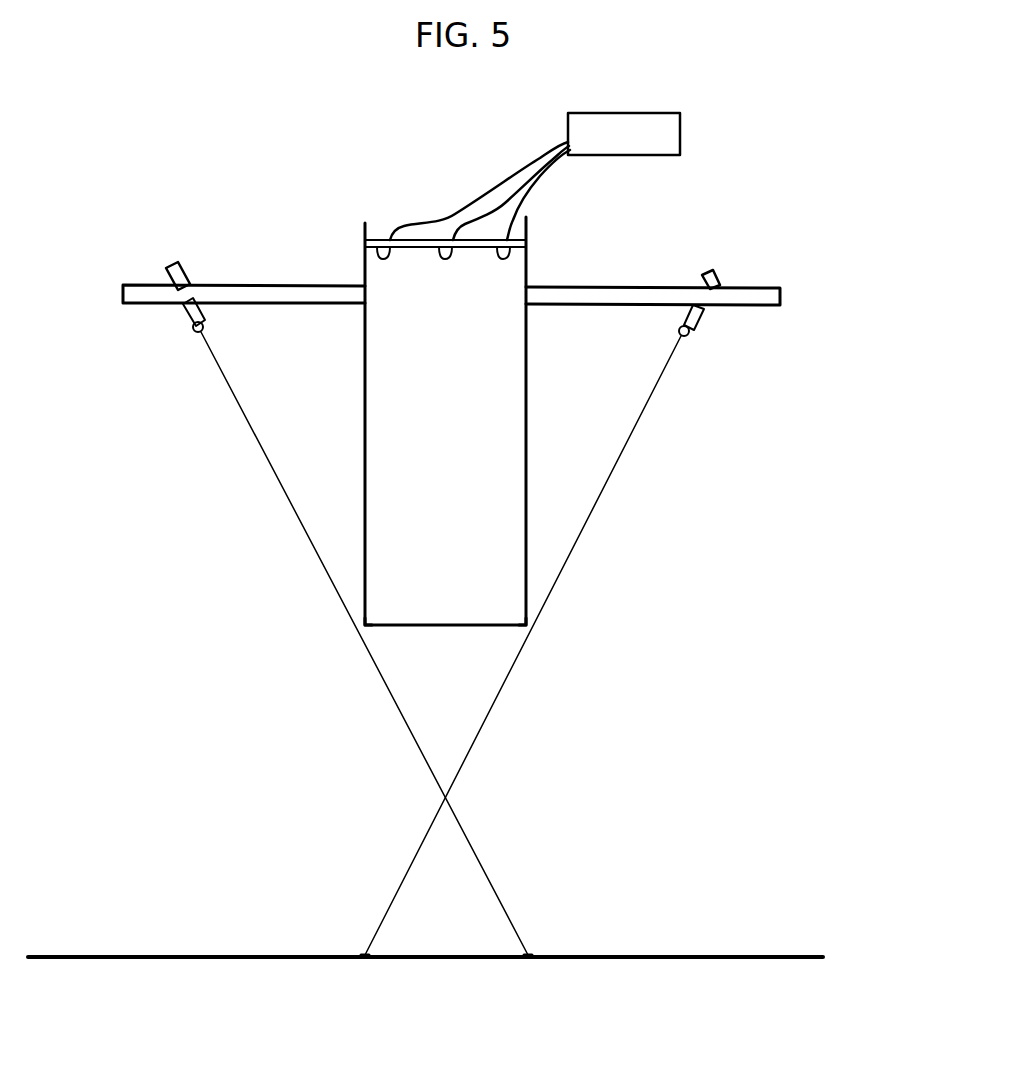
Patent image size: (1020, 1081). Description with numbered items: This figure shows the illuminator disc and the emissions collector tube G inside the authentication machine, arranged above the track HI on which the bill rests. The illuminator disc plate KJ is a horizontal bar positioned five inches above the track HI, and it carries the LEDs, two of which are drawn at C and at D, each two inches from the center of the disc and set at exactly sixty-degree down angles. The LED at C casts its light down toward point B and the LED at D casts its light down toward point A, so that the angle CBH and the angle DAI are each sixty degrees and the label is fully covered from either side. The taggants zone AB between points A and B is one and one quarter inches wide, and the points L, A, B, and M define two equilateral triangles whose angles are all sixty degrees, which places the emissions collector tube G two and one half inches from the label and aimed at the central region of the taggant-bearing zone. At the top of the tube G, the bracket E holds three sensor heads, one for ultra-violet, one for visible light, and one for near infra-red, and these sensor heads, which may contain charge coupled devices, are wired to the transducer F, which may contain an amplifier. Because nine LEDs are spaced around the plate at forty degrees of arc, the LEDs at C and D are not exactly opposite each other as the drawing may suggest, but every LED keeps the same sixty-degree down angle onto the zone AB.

The taggants zone endpoint A is at (350, 944).
The taggants zone endpoint B is at (535, 944).
The LED C is at (344, 592).
The LED D is at (545, 592).
The bracket E is at (456, 248).
The transducer F is at (544, 176).
The emissions collector tube G is at (457, 421).
The track endpoint H is at (234, 978).
The track endpoint I is at (638, 977).
The illuminator disc plate endpoint J is at (661, 297).
The illuminator disc plate endpoint K is at (229, 295).
The equilateral triangle vertex L is at (351, 630).
The equilateral triangle vertex M is at (544, 622).